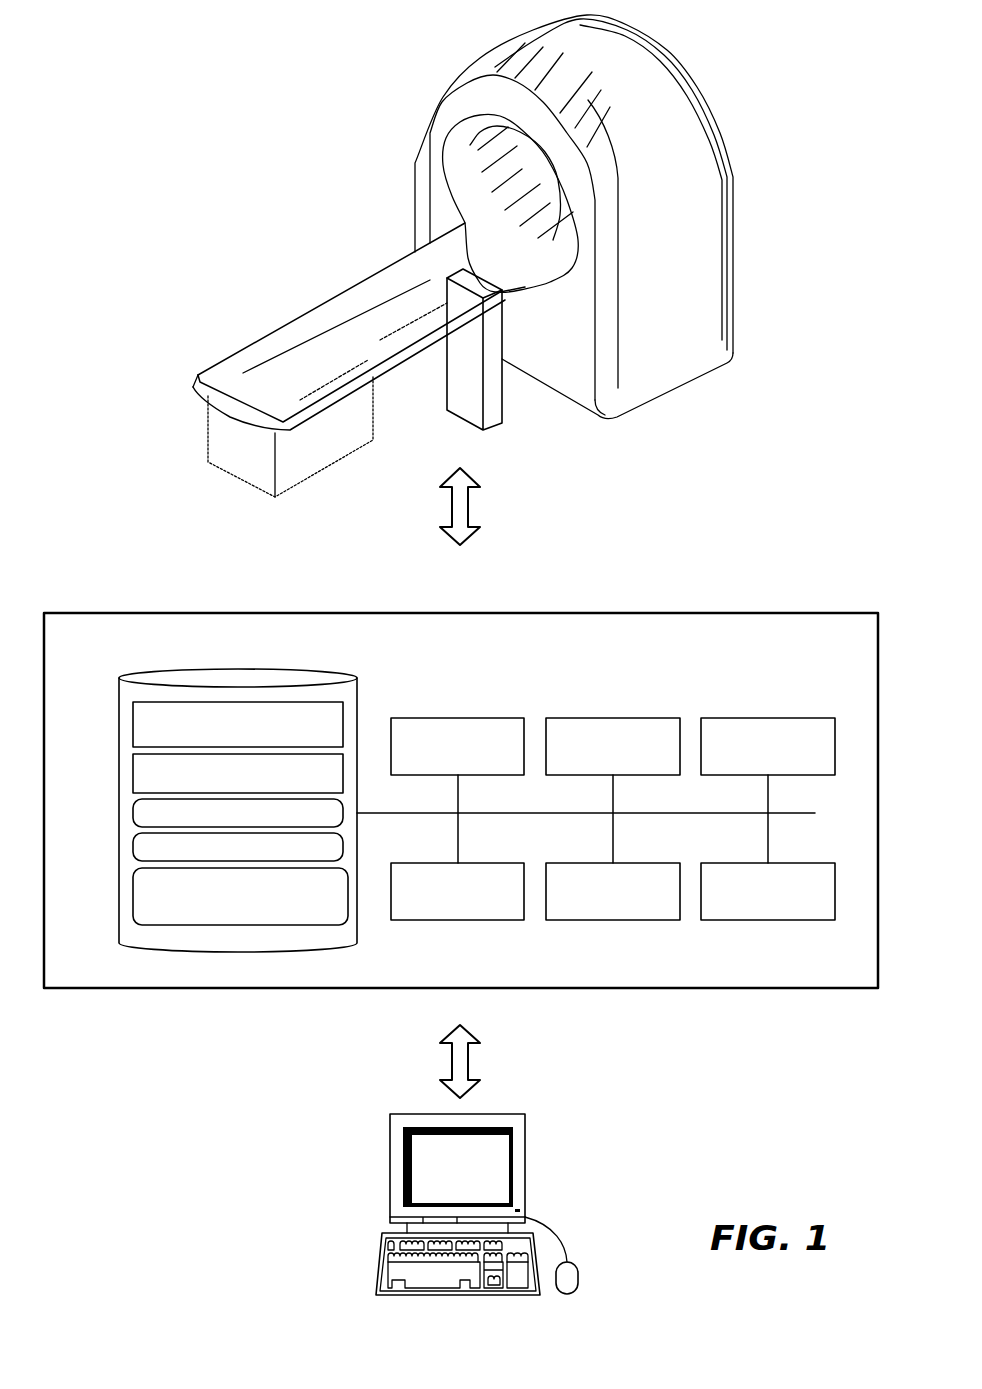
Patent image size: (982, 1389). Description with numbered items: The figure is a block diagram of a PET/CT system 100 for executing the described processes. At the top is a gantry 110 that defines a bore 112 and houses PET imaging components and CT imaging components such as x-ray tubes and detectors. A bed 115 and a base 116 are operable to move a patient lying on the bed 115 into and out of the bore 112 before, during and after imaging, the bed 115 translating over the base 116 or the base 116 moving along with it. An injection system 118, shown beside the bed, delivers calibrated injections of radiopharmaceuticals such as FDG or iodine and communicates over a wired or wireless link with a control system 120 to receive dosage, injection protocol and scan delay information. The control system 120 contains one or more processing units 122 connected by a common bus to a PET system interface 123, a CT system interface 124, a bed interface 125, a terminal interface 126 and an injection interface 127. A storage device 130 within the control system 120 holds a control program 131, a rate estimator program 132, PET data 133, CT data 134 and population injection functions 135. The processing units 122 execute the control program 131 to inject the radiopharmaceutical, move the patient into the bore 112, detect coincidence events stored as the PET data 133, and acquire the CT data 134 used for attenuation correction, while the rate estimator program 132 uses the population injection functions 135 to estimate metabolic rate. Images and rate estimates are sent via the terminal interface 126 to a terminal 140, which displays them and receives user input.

The PET/CT system 100 is at (298, 40).
The gantry 110 is at (487, 62).
The bore 112 is at (497, 192).
The bed 115 is at (287, 325).
The base 116 is at (370, 430).
The injection system 118 is at (487, 354).
The control system 120 is at (837, 649).
The processing units 122 is at (496, 863).
The PET system interface 123 is at (483, 718).
The CT system interface 124 is at (639, 718).
The bed interface 125 is at (789, 718).
The terminal interface 126 is at (644, 863).
The injection interface 127 is at (791, 863).
The storage device 130 is at (323, 676).
The control program 131 is at (132, 724).
The rate estimator program 132 is at (132, 774).
The PET data 133 is at (132, 813).
The CT data 134 is at (132, 848).
The population injection functions 135 is at (132, 897).
The terminal 140 is at (581, 1160).